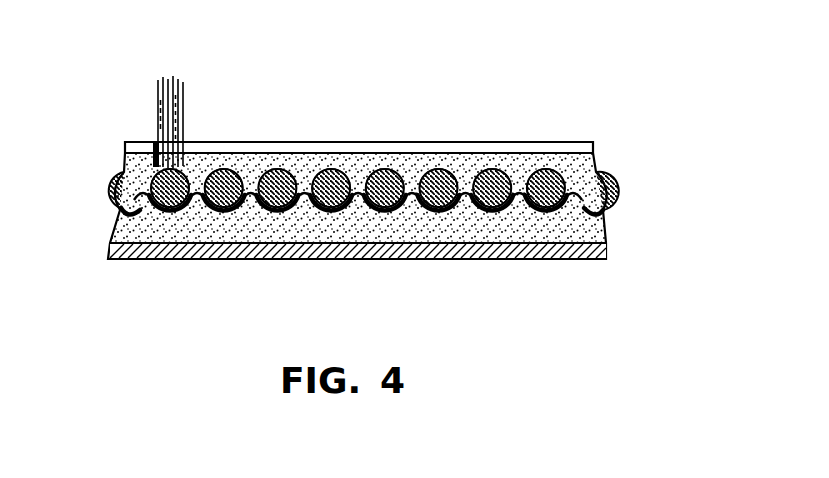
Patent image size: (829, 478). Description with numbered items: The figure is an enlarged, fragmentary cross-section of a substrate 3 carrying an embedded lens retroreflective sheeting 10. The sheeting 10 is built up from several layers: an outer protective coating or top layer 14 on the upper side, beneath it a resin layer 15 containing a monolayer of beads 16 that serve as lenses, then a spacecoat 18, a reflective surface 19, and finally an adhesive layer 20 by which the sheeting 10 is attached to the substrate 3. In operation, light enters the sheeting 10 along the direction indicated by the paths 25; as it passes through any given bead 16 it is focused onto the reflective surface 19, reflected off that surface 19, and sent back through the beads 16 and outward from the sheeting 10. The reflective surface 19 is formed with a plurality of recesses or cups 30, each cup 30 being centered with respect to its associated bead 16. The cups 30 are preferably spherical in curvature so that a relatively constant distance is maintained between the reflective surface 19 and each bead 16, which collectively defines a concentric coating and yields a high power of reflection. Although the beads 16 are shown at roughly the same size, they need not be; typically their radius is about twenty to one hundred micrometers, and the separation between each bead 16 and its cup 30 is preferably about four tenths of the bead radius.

The sheeting 10 is at (637, 118).
The outer protective coating 14 is at (380, 142).
The resin layer 15 is at (130, 170).
The beads 16 is at (277, 177).
The spacecoat 18 is at (271, 216).
The reflective surface 19 is at (240, 218).
The adhesive layer 20 is at (137, 233).
The substrate 3 is at (148, 250).
The paths 25 is at (182, 99).
The cups 30 is at (176, 216).